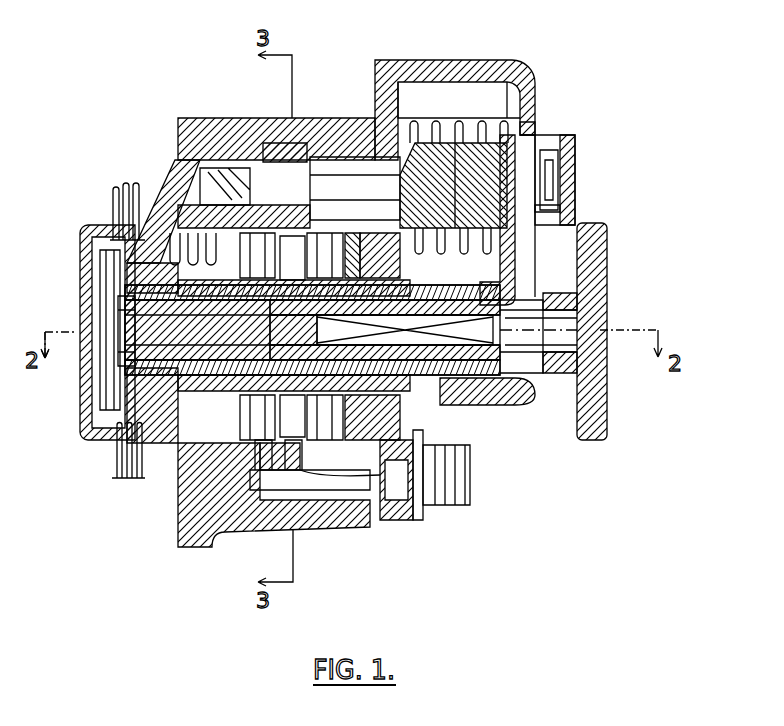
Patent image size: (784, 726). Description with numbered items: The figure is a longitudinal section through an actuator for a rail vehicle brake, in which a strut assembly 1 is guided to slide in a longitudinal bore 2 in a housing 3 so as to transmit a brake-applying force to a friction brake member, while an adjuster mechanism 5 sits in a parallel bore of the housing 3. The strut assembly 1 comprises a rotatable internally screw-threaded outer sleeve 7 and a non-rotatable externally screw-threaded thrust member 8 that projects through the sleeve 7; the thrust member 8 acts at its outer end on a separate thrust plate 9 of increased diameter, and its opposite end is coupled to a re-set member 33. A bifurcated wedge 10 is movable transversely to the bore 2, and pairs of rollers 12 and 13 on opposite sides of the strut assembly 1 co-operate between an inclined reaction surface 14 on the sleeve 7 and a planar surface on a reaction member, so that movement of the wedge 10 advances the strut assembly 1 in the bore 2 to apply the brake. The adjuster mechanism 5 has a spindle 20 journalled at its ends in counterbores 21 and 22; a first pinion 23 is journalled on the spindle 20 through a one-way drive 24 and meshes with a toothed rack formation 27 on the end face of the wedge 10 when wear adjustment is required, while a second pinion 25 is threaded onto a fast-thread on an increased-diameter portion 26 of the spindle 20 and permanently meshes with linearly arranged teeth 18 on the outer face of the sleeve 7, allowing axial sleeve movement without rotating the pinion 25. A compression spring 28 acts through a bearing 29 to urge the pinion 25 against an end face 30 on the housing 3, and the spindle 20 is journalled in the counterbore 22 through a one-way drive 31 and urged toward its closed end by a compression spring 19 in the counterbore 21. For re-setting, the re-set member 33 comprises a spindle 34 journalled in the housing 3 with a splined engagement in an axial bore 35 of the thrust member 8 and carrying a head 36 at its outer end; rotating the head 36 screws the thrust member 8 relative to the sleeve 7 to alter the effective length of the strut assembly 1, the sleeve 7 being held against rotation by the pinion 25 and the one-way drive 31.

The strut assembly 1 is at (107, 440).
The longitudinal bore 2 is at (120, 230).
The housing 3 is at (513, 58).
The adjuster mechanism 5 is at (410, 175).
The outer sleeve 7 is at (180, 187).
The thrust member 8 is at (105, 382).
The thrust plate 9 is at (82, 322).
The bifurcated wedge 10 is at (292, 418).
The rollers 12 is at (258, 143).
The rollers 13 is at (330, 232).
The inclined reaction surface 14 is at (185, 470).
The teeth 18 is at (482, 398).
The compression spring 19 is at (188, 125).
The spindle 20 is at (368, 178).
The counterbore 21 is at (190, 163).
The counterbore 22 is at (570, 150).
The first pinion 23 is at (268, 118).
The one-way drive 24 is at (291, 140).
The second pinion 25 is at (525, 100).
The increased-diameter portion 26 is at (453, 175).
The toothed rack formation 27 is at (308, 255).
The compression spring 28 is at (422, 122).
The bearing 29 is at (530, 130).
The end face 30 is at (525, 277).
The one-way drive 31 is at (560, 208).
The re-set member 33 is at (597, 413).
The spindle 34 is at (520, 385).
The axial bore 35 is at (160, 358).
The head 36 is at (583, 288).